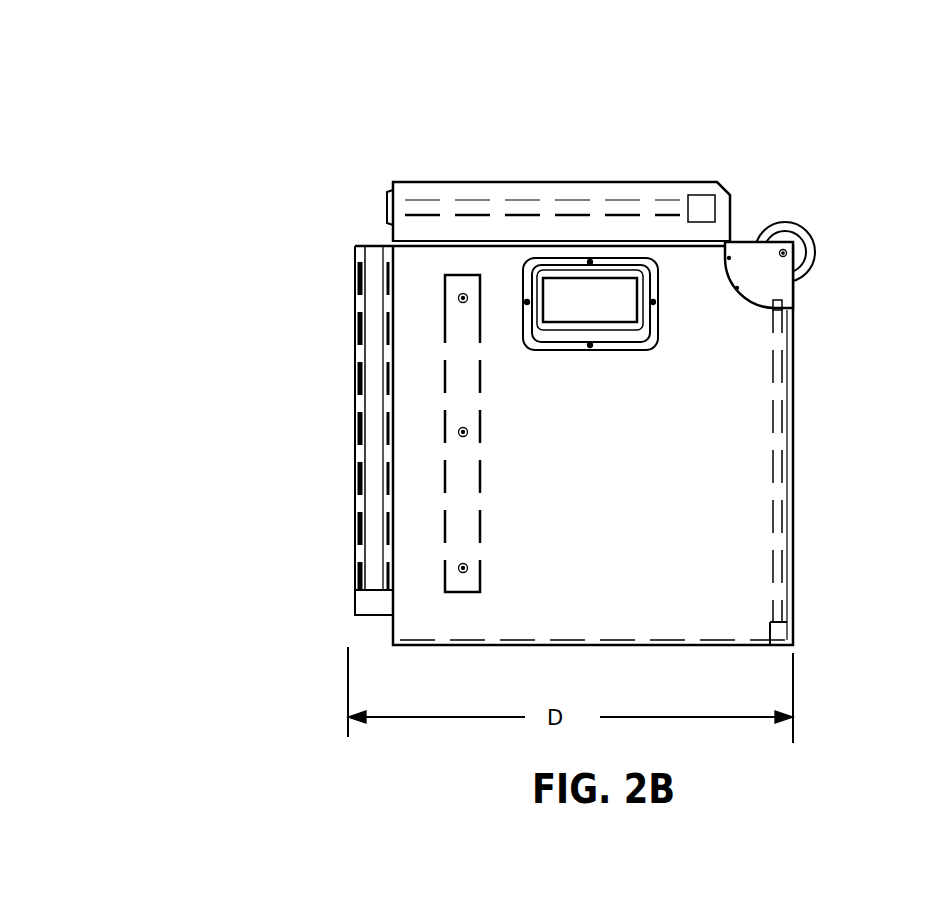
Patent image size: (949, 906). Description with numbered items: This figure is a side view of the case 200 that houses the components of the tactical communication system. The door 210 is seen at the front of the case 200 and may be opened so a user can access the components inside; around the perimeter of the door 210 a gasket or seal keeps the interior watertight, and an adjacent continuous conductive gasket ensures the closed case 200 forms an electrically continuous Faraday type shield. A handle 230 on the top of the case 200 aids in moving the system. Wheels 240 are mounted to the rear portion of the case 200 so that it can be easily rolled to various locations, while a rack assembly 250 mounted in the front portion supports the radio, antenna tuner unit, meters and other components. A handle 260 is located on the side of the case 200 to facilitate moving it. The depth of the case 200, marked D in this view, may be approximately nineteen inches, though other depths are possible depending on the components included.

The case 200 is at (310, 108).
The door 210 is at (355, 248).
The handle 230 is at (605, 192).
The wheels 240 is at (815, 244).
The rack assembly 250 is at (445, 600).
The handles 260 is at (587, 347).